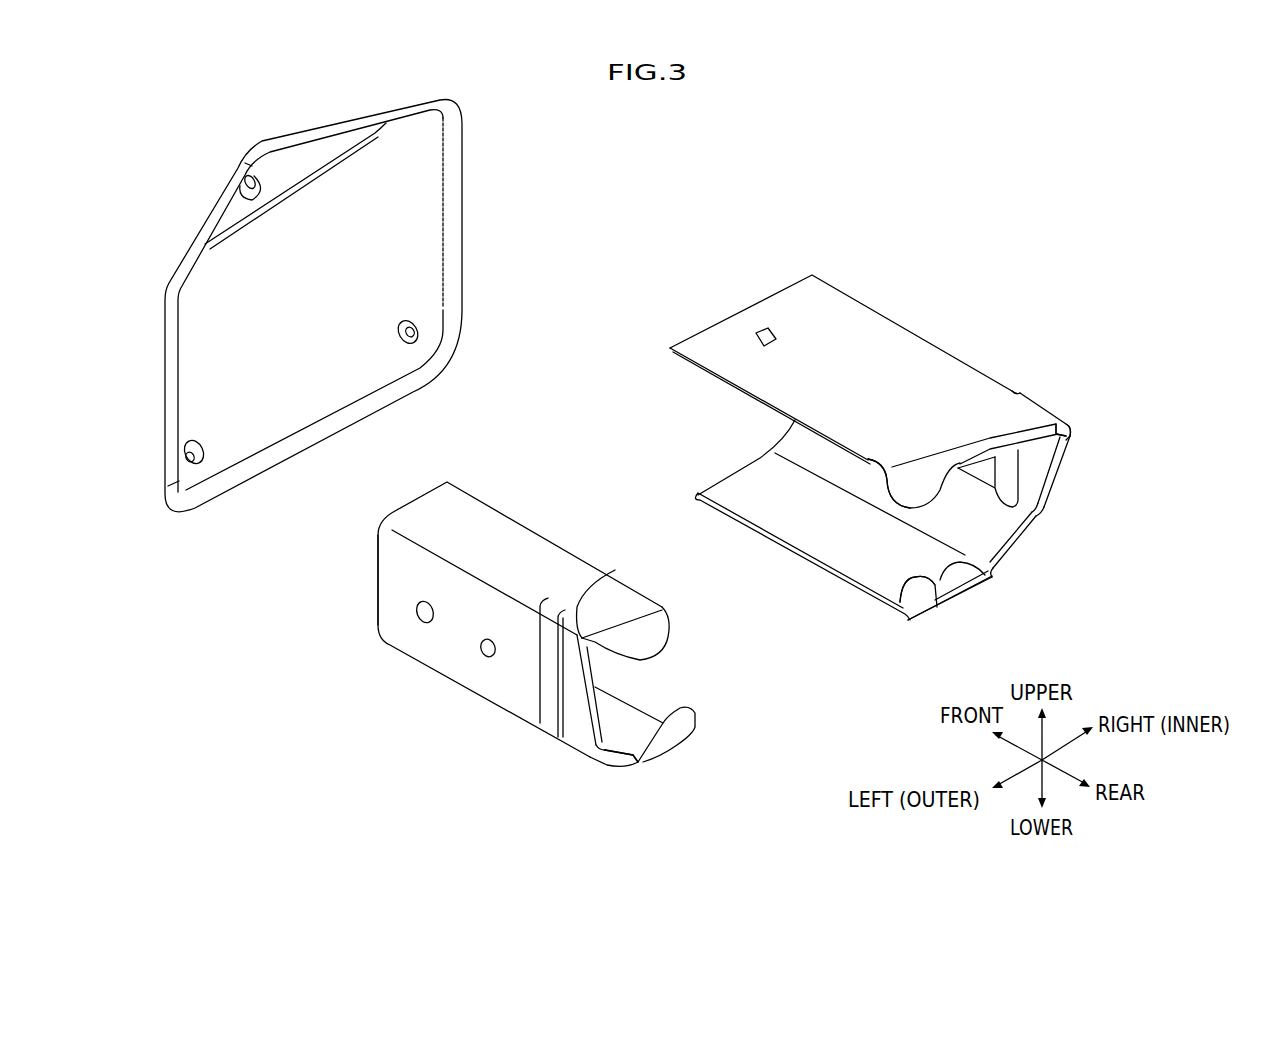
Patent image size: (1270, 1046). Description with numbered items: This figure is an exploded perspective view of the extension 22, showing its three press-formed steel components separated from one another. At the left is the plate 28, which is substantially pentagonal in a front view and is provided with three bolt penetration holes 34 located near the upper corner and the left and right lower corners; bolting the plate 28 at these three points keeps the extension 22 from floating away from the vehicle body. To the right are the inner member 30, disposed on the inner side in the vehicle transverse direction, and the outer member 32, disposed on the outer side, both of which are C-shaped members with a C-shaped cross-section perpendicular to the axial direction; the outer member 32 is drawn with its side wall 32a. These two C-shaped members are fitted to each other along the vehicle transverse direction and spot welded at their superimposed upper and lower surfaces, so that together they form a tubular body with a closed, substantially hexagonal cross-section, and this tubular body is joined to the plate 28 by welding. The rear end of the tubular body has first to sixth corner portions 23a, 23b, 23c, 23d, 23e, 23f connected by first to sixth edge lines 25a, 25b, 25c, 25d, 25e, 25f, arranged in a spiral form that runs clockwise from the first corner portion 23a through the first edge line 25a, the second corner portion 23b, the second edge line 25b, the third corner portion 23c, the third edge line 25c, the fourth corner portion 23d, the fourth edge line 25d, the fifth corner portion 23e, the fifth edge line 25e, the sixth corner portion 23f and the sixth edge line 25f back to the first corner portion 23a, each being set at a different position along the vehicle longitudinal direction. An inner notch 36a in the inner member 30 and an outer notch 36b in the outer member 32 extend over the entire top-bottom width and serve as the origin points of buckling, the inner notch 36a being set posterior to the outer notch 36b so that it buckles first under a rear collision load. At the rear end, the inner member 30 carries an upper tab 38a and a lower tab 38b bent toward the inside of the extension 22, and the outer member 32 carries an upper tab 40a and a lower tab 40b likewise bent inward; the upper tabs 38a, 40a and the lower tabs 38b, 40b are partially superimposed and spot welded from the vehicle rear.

The extension 22 is at (951, 149).
The plate 28 is at (481, 189).
The inner member 30 is at (898, 310).
The outer member 32 is at (458, 706).
The side wall of second bracket 32a is at (440, 642).
The bolt penetration holes 34 is at (250, 188).
The inner notch 36a is at (1018, 390).
The outer notch 36b is at (552, 682).
The upper tab 38a is at (913, 497).
The lower tab 38b is at (920, 578).
The upper tab 40a is at (657, 640).
The lower tab 40b is at (697, 718).
The first corner portion 23a is at (1074, 437).
The second corner portion 23b is at (1046, 512).
The third corner portion 23c is at (994, 578).
The fourth corner portion 23d is at (643, 768).
The fifth corner portion 23e is at (600, 760).
The sixth corner portion 23f is at (615, 570).
The first edge line 25a is at (1068, 475).
The second edge line 25b is at (1022, 537).
The third edge line 25c is at (961, 600).
The fourth edge line 25d is at (620, 760).
The fifth edge line 25e is at (588, 722).
The sixth edge line 25f is at (982, 455).